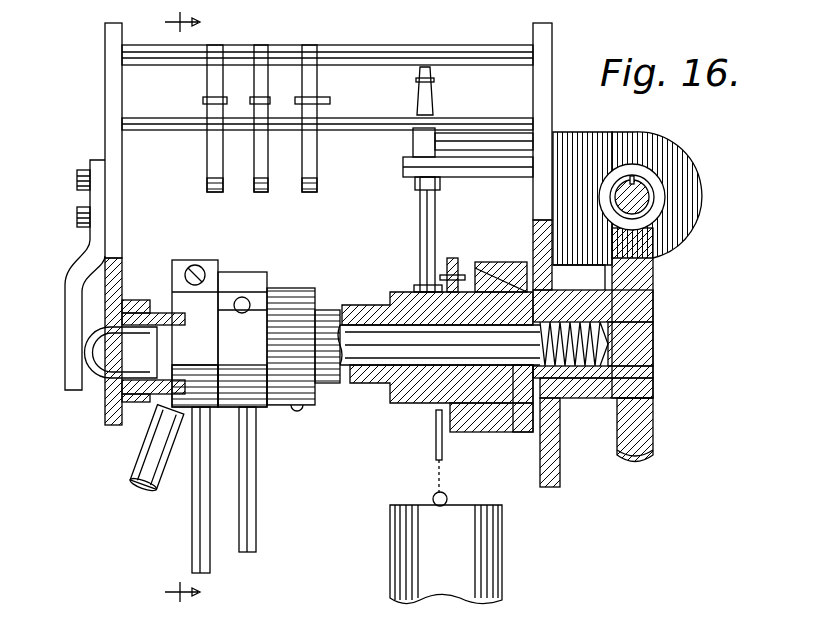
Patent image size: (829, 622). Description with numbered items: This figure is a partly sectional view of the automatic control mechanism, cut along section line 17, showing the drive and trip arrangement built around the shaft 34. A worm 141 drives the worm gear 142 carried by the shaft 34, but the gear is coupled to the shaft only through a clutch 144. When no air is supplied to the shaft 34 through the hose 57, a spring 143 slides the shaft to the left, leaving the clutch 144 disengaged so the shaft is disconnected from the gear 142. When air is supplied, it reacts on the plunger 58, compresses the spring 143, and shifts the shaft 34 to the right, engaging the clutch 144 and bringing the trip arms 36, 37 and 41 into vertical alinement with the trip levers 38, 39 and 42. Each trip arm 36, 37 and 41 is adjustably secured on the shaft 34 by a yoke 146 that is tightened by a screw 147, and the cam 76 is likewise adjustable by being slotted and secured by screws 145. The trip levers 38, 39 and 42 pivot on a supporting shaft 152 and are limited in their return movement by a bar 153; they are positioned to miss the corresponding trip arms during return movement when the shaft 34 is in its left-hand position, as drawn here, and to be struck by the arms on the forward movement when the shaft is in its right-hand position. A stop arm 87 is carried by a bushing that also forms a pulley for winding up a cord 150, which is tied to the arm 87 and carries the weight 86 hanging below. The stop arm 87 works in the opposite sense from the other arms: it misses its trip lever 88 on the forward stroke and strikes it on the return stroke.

The section line 17- 17 is at (203, 310).
The shaft 34 is at (333, 386).
The trip arm 36 is at (192, 530).
The trip arm 37 is at (257, 508).
The trip lever 38 is at (207, 168).
The trip lever 39 is at (262, 192).
The trip arm 41 is at (297, 412).
The trip lever 42 is at (317, 162).
The hose 57 is at (140, 460).
The plunger 58 is at (100, 378).
The cam 76 is at (504, 331).
The weight 86 is at (392, 562).
The stop arm 87 is at (420, 210).
The trip lever 88 is at (435, 100).
The worm 141 is at (660, 195).
The worm gear 142 is at (655, 288).
The spring 143 is at (570, 385).
The clutch 144 is at (525, 432).
The screws 145 is at (451, 258).
The yoke 146 is at (262, 270).
The screw 147 is at (190, 270).
The cord 150 is at (414, 288).
The supporting shaft 152 is at (340, 50).
The bar 153 is at (340, 122).